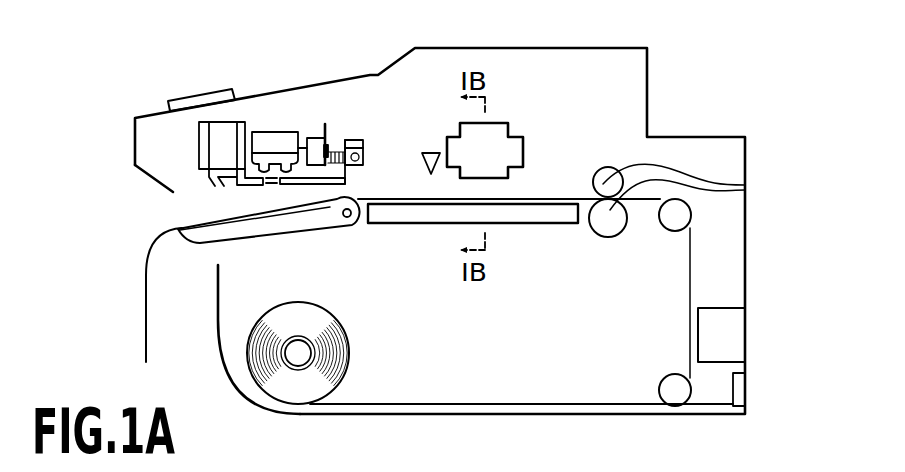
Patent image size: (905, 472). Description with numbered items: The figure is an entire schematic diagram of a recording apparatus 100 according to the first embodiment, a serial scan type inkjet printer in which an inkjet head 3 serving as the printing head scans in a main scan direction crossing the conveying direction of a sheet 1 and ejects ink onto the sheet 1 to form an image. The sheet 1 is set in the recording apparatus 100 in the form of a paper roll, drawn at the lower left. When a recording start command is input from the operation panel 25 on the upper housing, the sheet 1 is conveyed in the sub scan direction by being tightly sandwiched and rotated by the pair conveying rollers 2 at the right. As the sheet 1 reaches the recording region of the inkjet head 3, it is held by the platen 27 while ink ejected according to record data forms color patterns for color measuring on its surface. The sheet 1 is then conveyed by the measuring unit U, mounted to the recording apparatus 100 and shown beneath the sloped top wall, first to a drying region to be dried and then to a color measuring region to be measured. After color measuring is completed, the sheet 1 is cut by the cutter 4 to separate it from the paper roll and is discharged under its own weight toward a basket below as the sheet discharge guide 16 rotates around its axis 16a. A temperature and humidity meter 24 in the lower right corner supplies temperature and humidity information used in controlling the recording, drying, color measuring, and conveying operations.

The recording apparatus 100 is at (700, 137).
The sheet 1 is at (146, 318).
The pair conveying rollers 2 is at (747, 187).
The inkjet head 3 is at (518, 147).
The cutter 4 is at (430, 153).
The measuring unit U is at (270, 110).
The operation panel 25 is at (192, 92).
The discharge guide 16 is at (262, 222).
The axis 16a is at (348, 221).
The platen 27 is at (547, 215).
The temperature and humidity meter 24 is at (742, 388).